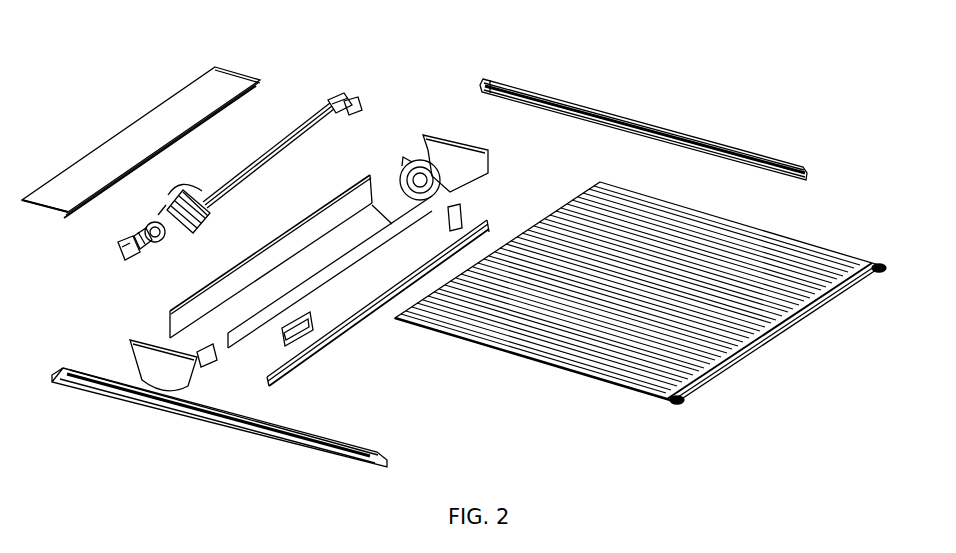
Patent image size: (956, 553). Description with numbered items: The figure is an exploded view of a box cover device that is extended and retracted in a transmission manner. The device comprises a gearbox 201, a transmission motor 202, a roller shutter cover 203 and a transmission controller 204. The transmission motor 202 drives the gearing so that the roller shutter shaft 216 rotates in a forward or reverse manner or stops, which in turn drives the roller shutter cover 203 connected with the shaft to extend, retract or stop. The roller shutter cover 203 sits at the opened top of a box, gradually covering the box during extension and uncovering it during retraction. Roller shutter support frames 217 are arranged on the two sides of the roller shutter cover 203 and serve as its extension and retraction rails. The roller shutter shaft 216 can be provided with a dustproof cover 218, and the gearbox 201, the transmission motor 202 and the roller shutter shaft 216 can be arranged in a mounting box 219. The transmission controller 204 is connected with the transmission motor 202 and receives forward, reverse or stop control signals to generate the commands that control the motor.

The gearbox 201 is at (182, 228).
The transmission motor 202 is at (128, 240).
The roller shutter cover 203 is at (763, 228).
The transmission controller 204 is at (132, 252).
The roller shutter shaft 216 is at (307, 124).
The roller shutter support frames 217 is at (633, 120).
The dustproof cover 218 is at (215, 85).
The mounting box 219 is at (303, 244).